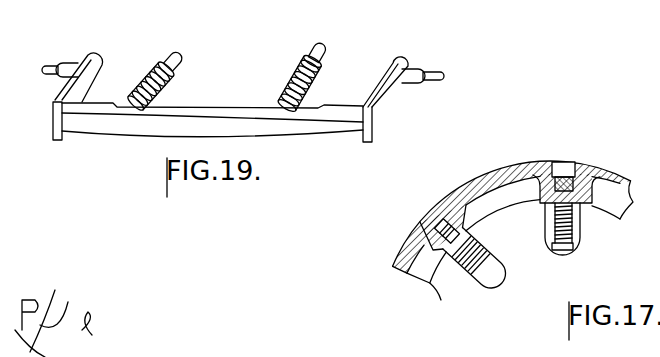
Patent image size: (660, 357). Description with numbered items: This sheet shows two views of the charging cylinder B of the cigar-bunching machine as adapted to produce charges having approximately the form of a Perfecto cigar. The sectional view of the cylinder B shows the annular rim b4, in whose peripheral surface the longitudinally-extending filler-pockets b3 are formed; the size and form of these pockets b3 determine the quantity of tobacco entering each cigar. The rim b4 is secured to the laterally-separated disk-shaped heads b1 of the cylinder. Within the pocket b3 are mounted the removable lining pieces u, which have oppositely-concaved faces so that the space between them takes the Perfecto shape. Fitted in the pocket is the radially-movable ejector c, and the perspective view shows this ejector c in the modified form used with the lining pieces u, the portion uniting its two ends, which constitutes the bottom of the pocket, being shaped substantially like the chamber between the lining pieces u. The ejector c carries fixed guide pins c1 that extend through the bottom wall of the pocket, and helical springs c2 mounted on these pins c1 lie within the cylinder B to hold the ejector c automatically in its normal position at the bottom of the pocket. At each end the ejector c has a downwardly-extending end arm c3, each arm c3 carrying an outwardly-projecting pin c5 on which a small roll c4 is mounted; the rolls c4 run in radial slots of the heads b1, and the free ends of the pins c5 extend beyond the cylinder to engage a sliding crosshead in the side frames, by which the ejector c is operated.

In FIG. 19, the ejector c is at (167, 124).
In FIG. 17, the ejector c is at (440, 225).
In FIG. 19, the guide pin c1 is at (181, 55).
In FIG. 17, the guide pin c1 is at (502, 276).
In FIG. 19, the helical spring c2 is at (172, 72).
In FIG. 17, the helical spring c2 is at (555, 231).
In FIG. 19, the end arm c3 is at (94, 76).
In FIG. 17, the end arm c3 is at (578, 237).
In FIG. 19, the roll c4 is at (73, 64).
In FIG. 19, the pin c5 is at (449, 55).
In FIG. 17, the cylinder B is at (513, 221).
In FIG. 17, the disk-shaped head b1 is at (622, 228).
In FIG. 17, the filler-pocket b3 is at (582, 172).
In FIG. 17, the annular rim b4 is at (488, 198).
In FIG. 17, the lining piece u is at (575, 161).